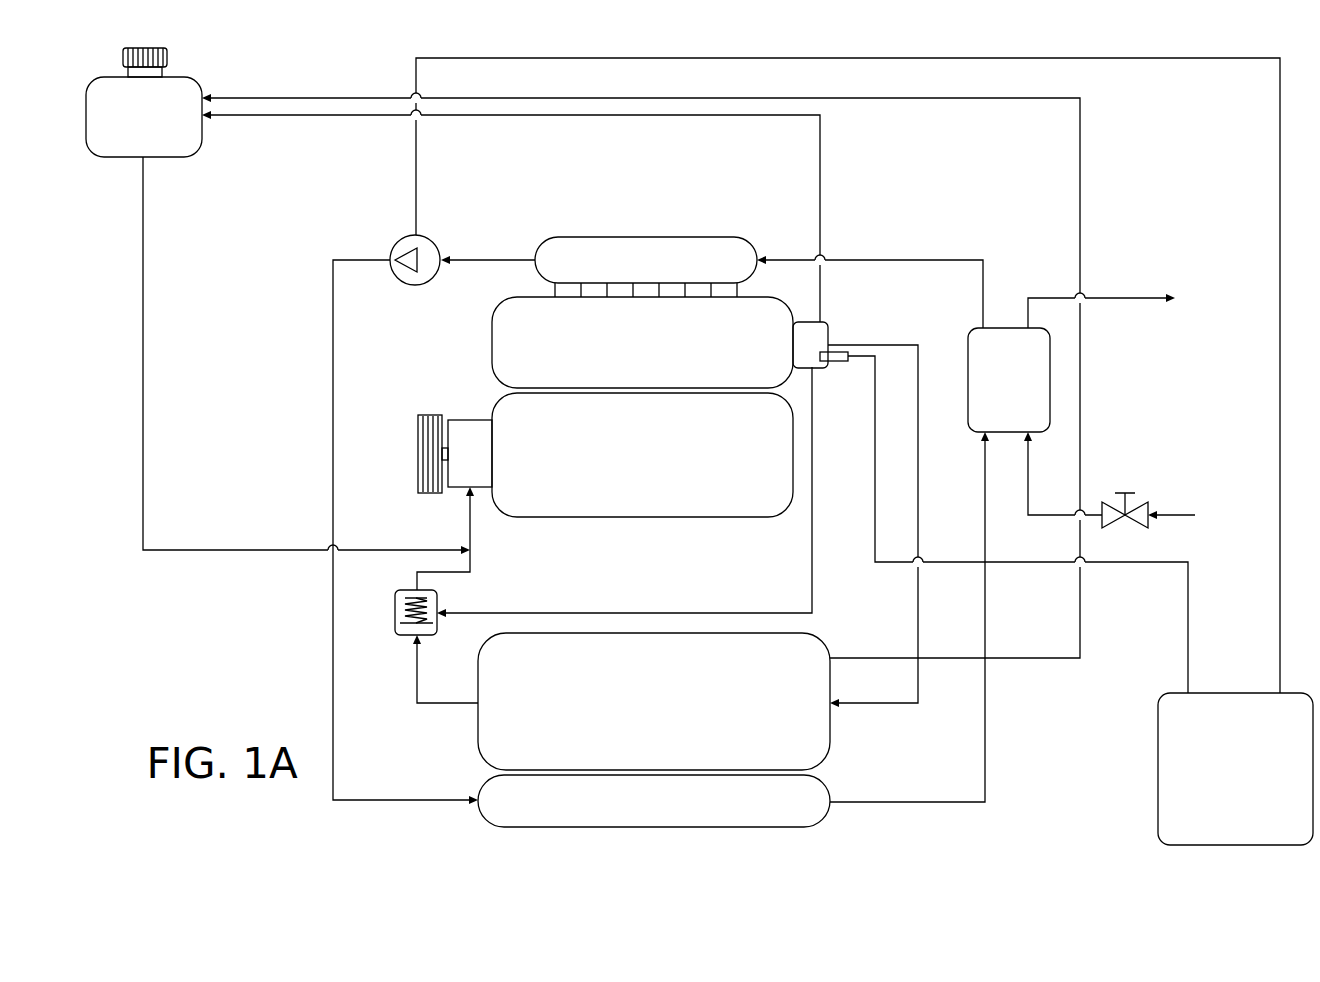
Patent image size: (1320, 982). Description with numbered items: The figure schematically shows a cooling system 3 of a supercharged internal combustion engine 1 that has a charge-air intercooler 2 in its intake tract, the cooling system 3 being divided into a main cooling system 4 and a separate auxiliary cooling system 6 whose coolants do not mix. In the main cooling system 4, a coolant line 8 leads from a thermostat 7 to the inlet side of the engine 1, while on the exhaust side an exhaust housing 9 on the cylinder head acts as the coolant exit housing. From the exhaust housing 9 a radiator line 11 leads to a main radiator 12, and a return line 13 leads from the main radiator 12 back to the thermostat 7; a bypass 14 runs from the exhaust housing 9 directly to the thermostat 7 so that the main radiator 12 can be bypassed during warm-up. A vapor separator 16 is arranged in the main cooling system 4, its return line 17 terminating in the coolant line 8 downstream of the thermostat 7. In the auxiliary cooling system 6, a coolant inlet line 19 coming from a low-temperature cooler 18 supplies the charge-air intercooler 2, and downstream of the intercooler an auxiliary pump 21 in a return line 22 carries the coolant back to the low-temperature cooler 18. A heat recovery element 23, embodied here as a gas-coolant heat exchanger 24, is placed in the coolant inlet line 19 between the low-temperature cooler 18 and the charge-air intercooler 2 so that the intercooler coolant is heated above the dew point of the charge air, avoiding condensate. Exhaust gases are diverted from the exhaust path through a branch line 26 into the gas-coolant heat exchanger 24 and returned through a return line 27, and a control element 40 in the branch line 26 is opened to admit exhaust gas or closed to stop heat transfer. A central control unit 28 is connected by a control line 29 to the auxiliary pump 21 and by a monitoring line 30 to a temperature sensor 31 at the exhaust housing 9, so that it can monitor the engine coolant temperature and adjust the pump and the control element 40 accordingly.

The internal combustion engine 1 is at (605, 407).
The charge-air intercooler 2 is at (646, 267).
The cooling system 3 is at (870, 468).
The main cooling system 4 is at (873, 511).
The auxiliary cooling system 6 is at (870, 279).
The thermostat 7 is at (404, 612).
The coolant line 8 is at (456, 538).
The exhaust housing 9 is at (515, 239).
The radiator line 11 is at (898, 688).
The main radiator 12 is at (641, 431).
The return line 13 is at (445, 669).
The bypass 14 is at (624, 492).
The vapor separator 16 is at (144, 102).
The return line 17 is at (306, 355).
The low-temperature cooler 18 is at (654, 801).
The coolant inlet line 19 is at (909, 617).
The auxiliary pump 21 is at (408, 242).
The return line 22 is at (405, 532).
The heat recovery element 23 is at (1009, 380).
The gas-coolant heat exchanger 24 is at (1009, 380).
The branch line 26 is at (1063, 473).
The return line 27 is at (1101, 299).
The central control unit 28 is at (1235, 769).
The control line 29 is at (848, 360).
The monitoring line 30 is at (1018, 524).
The temperature sensor 31 is at (833, 368).
The control element 40 is at (1148, 497).